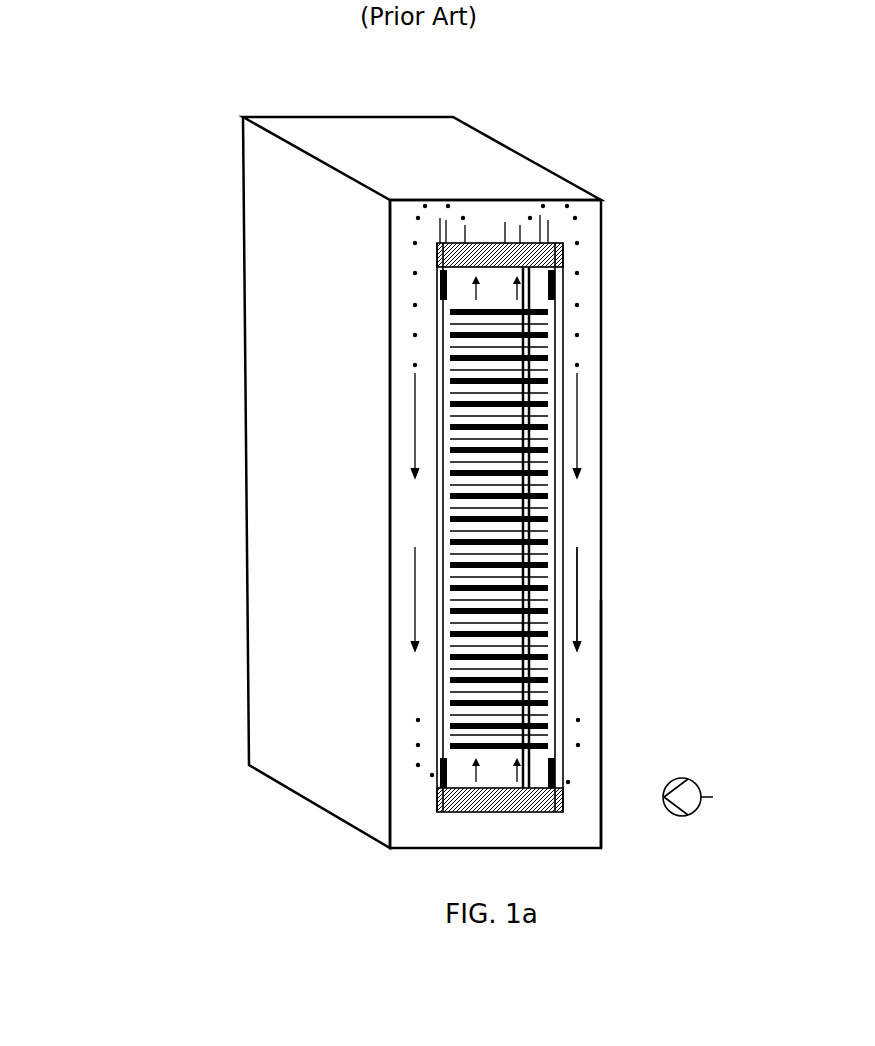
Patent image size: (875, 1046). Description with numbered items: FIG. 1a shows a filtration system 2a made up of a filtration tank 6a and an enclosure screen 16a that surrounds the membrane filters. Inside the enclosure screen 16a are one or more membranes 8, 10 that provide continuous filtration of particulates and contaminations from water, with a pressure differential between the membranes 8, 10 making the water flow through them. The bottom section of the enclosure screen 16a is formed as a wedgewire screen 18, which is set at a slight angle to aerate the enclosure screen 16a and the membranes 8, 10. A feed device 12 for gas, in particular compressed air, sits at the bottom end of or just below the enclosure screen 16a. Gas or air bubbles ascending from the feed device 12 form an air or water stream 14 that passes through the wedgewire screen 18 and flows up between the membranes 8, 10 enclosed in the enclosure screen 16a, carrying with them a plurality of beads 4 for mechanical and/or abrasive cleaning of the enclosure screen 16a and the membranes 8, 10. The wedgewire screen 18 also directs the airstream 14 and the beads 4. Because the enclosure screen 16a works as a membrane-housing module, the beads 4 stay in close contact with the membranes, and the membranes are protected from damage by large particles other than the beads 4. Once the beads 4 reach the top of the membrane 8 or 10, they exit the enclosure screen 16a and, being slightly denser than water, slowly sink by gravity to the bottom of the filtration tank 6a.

The filtration system 2a is at (203, 222).
The beads 4 is at (577, 338).
The filtration tank 6a is at (602, 715).
The membrane 8 is at (548, 495).
The membrane 10 is at (524, 533).
The feed device 12 is at (565, 797).
The air or water stream 14 is at (565, 768).
The enclosure screen 16a is at (577, 648).
The wedgewire screen 18 is at (447, 785).